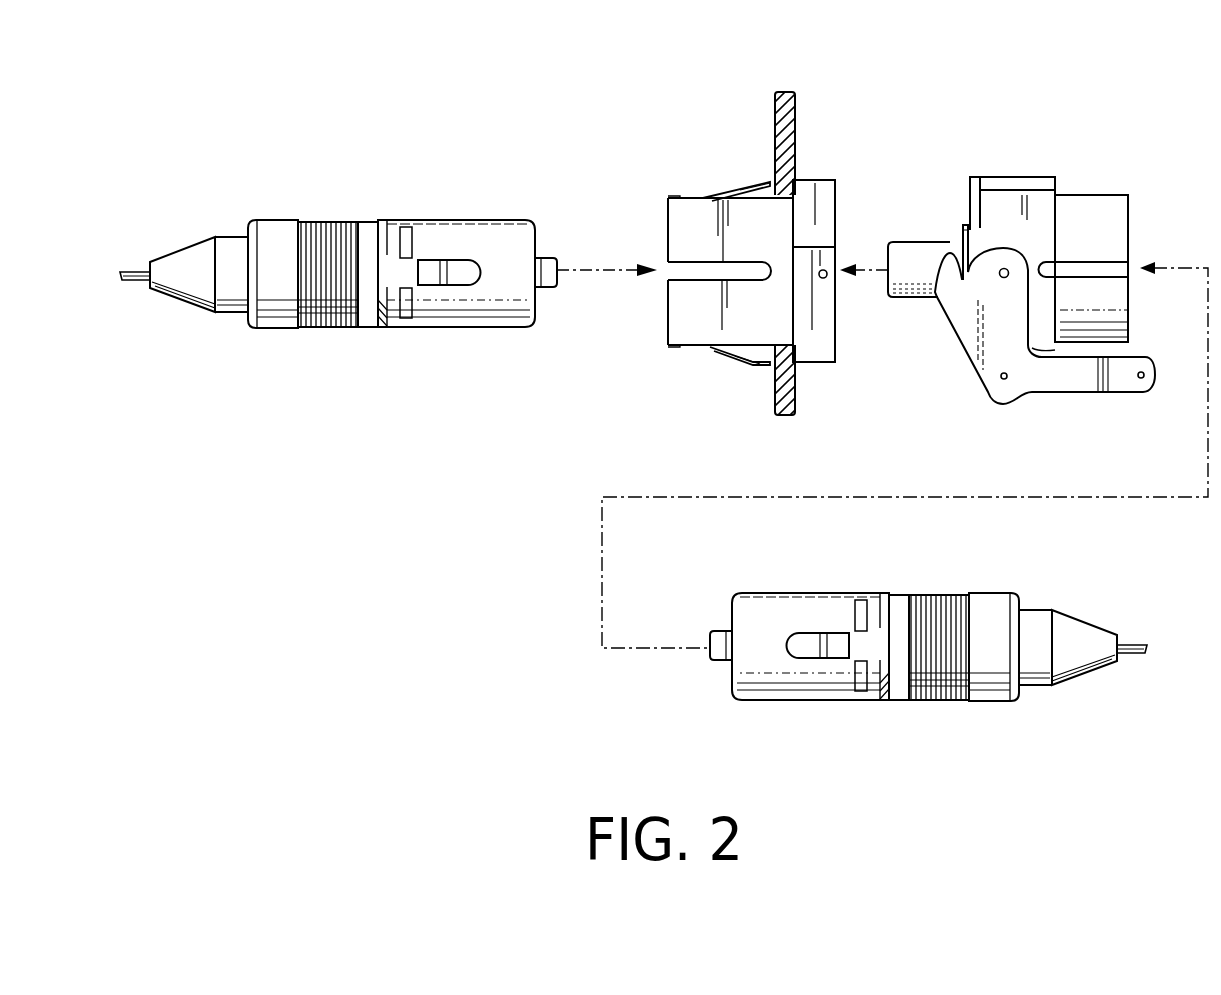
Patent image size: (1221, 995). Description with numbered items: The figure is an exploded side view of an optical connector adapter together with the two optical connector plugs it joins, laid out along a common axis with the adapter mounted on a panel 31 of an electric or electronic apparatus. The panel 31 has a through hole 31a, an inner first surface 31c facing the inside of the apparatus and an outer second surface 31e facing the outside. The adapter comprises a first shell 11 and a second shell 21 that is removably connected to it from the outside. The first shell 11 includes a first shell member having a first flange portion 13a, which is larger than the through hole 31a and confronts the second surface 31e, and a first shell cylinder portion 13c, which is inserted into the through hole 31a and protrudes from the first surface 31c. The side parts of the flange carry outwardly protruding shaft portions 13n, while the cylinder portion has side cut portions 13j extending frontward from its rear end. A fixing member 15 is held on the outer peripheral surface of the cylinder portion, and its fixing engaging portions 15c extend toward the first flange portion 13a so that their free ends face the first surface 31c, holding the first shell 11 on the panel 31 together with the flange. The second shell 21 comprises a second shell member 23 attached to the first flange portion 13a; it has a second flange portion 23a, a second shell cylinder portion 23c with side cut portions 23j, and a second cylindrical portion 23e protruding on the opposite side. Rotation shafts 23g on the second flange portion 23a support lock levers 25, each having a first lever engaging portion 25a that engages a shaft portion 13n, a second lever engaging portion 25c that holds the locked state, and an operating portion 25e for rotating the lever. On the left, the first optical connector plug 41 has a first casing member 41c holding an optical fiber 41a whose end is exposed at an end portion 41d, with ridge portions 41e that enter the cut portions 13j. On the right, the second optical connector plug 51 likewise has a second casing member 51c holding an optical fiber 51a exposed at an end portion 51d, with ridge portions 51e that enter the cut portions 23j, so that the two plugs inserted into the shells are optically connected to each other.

The first shell 11 is at (745, 242).
The first flange portion 13a is at (810, 187).
The first shell cylinder portion 13c is at (668, 213).
The cut portions 13j is at (684, 279).
The shaft portions 13n is at (832, 278).
The fixing member 15 is at (693, 198).
The fixing engaging portions 15c is at (737, 188).
The second shell 21 is at (1043, 289).
The second shell member 23 is at (1043, 237).
The second flange portion 23a is at (1008, 177).
The second shell cylinder portion 23c is at (1110, 217).
The second cylindrical portion 23e is at (920, 253).
The rotation shafts 23g is at (1003, 278).
The cut portions 23j is at (1122, 270).
The lock levers 25 is at (1040, 297).
The first lever engaging portion 25a is at (956, 253).
The second lever engaging portion 25c is at (1004, 380).
The operating portion 25e is at (1115, 378).
The panel 31 is at (798, 242).
The through hole 31a is at (800, 334).
The first surface 31c is at (777, 407).
The second surface 31e is at (793, 104).
The first optical connector plug 41 is at (350, 280).
The optical fiber 41a is at (137, 281).
The first casing member 41c is at (435, 318).
The end portion 41d is at (541, 257).
The ridge portions 41e is at (468, 287).
The second optical connector plug 51 is at (912, 655).
The optical fiber 51a is at (1126, 652).
The second casing member 51c is at (780, 690).
The end portion 51d is at (718, 665).
The ridge portions 51e is at (825, 635).